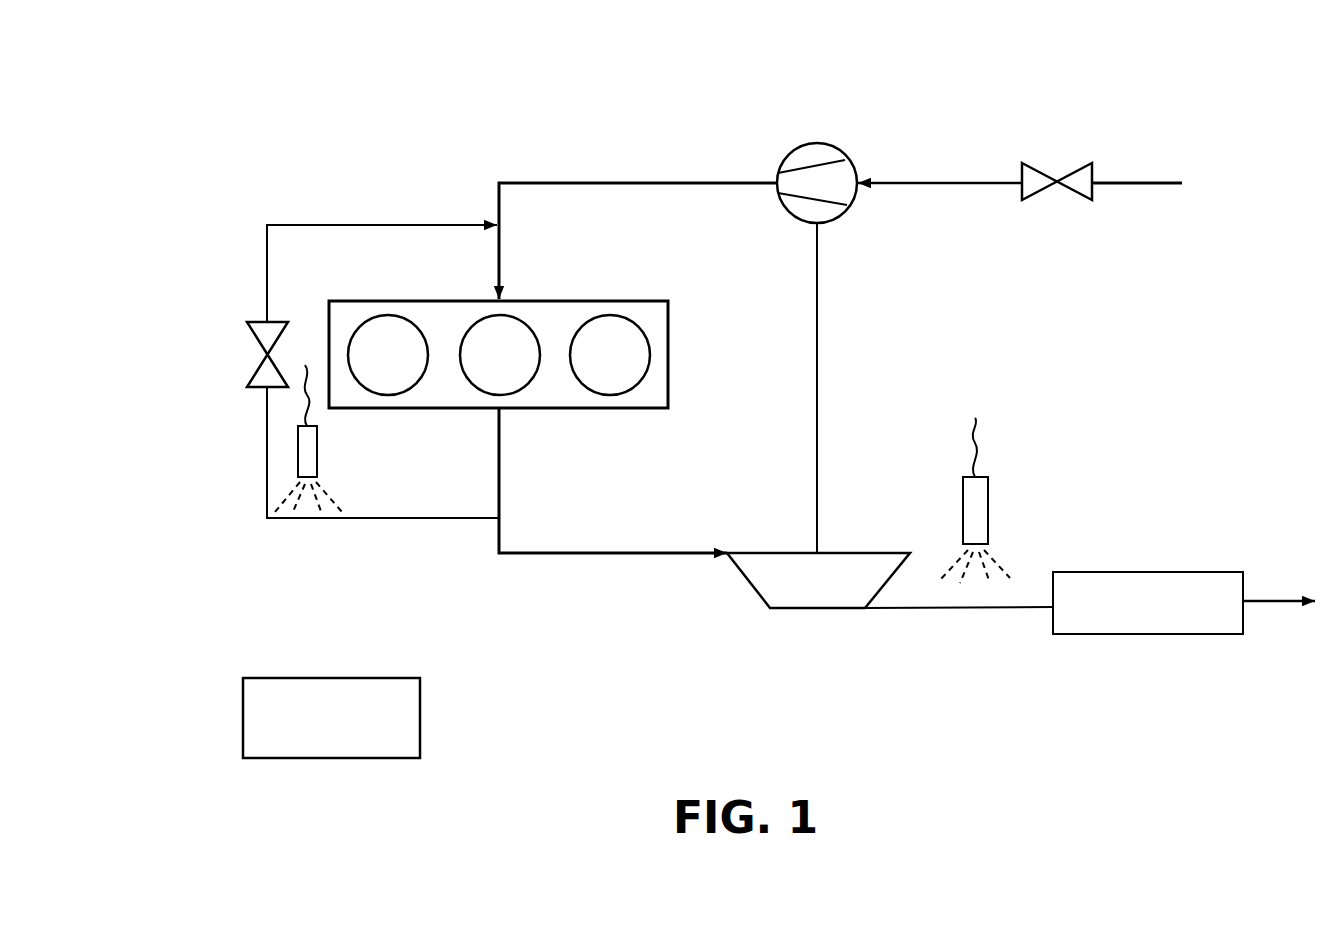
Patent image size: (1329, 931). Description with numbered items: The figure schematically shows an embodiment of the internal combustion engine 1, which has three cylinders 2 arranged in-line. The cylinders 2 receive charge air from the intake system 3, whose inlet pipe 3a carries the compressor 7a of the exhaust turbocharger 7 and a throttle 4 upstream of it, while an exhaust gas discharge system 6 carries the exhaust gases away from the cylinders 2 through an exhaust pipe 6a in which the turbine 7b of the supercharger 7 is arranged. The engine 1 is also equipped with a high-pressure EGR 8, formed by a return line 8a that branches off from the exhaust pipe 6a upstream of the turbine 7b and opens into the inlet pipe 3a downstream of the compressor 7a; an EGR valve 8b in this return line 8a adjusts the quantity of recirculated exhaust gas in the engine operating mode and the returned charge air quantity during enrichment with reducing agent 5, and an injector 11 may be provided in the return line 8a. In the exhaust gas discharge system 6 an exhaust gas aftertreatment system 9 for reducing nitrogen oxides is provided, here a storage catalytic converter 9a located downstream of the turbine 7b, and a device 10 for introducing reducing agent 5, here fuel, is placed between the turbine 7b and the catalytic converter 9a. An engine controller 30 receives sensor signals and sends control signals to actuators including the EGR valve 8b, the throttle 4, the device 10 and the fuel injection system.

The internal combustion engine 1 is at (375, 178).
The cylinders 2 is at (603, 368).
The intake system 3 is at (854, 186).
The inlet pipe 3a is at (613, 182).
The throttle 4 is at (1083, 177).
The reducing agent 5 is at (952, 557).
The exhaust gas discharge system 6 is at (907, 551).
The exhaust pipe 6a is at (597, 553).
The exhaust turbocharger 7 is at (818, 393).
The compressor 7a is at (833, 145).
The turbine 7b is at (815, 598).
The high-pressure EGR 8 is at (342, 381).
The return line 8a is at (327, 223).
The EGR valve 8b is at (258, 380).
The exhaust gas aftertreatment system 9 is at (1184, 574).
The storage catalytic converter 9a is at (1143, 587).
The device for introducing reducing agent 10 is at (983, 500).
The injector 11 is at (298, 448).
The engine controller 30 is at (331, 718).